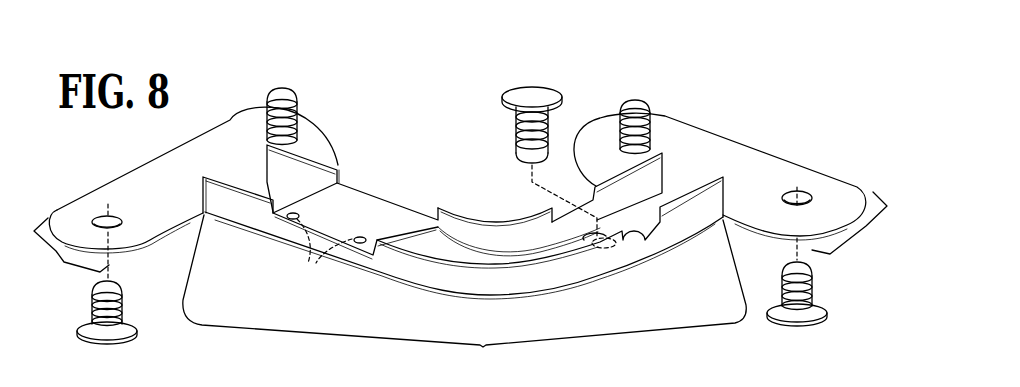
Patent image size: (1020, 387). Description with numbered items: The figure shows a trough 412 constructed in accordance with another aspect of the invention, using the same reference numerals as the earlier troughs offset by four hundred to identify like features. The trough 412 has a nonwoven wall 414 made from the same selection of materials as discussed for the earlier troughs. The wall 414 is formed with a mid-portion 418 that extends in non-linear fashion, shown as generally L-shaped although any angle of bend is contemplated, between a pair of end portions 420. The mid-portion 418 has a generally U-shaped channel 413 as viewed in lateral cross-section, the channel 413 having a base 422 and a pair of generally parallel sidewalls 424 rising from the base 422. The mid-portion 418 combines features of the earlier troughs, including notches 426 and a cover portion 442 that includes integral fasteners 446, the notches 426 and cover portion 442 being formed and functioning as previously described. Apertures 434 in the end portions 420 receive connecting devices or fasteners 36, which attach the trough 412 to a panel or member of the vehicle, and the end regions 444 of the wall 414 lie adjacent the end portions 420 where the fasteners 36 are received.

The fastener 36 is at (287, 93).
The trough 412 is at (446, 112).
The U-shaped channel 413 is at (266, 195).
The nonwoven wall 414 is at (743, 133).
The mid-portion 418 is at (464, 297).
The end portions 420 is at (470, 238).
The base 422 is at (645, 200).
The sidewalls 424 is at (350, 162).
The notches 426 is at (587, 236).
The mounting hole 434 is at (107, 213).
The cover portion 442 is at (350, 205).
The curved wall 444 is at (391, 200).
The integral fasteners 446 is at (318, 249).